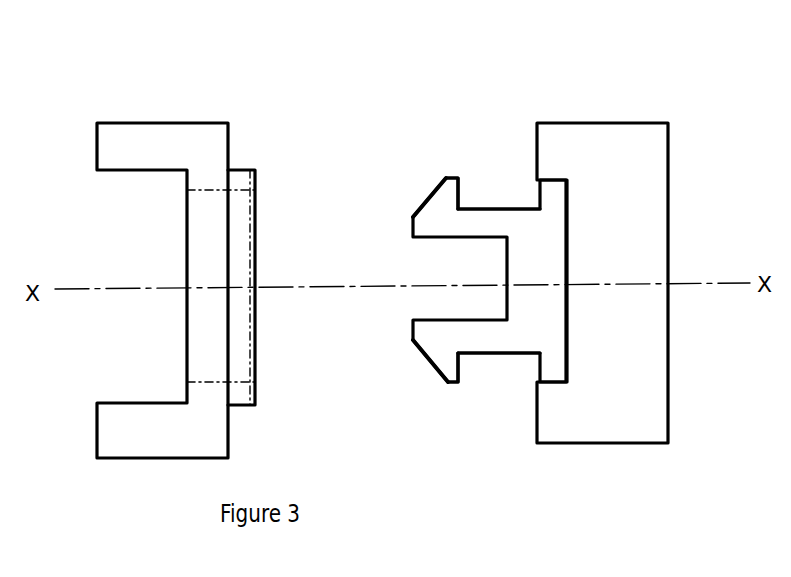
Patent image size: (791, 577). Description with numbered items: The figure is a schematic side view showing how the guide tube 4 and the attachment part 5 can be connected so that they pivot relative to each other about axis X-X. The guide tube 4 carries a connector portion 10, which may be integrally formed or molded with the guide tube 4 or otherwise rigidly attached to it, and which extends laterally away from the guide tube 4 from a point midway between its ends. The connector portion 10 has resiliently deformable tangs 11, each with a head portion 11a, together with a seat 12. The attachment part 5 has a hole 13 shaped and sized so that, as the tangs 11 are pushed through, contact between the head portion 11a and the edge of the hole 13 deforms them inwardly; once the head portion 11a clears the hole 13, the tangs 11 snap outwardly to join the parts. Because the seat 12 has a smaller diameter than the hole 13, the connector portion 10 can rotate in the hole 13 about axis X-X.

The guide tube 4 is at (665, 98).
The attachment part 5 is at (139, 254).
The connector portion 10 is at (485, 322).
The resiliently deformable tangs 11 is at (469, 224).
The head portion 11a is at (432, 207).
The seat 12 is at (488, 207).
The hole 13 is at (205, 227).